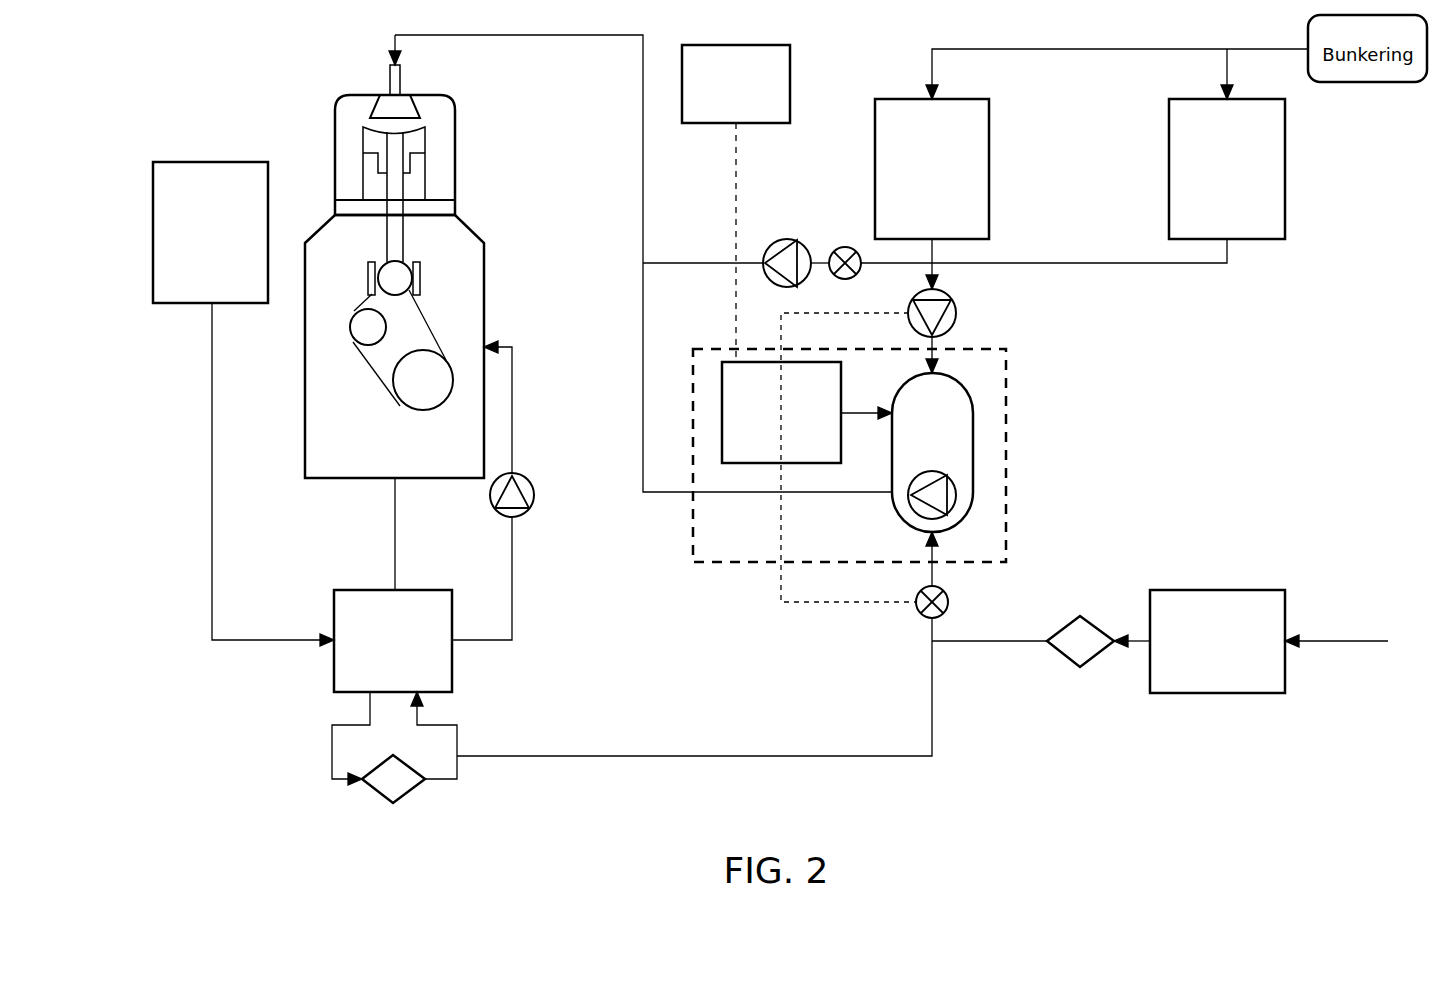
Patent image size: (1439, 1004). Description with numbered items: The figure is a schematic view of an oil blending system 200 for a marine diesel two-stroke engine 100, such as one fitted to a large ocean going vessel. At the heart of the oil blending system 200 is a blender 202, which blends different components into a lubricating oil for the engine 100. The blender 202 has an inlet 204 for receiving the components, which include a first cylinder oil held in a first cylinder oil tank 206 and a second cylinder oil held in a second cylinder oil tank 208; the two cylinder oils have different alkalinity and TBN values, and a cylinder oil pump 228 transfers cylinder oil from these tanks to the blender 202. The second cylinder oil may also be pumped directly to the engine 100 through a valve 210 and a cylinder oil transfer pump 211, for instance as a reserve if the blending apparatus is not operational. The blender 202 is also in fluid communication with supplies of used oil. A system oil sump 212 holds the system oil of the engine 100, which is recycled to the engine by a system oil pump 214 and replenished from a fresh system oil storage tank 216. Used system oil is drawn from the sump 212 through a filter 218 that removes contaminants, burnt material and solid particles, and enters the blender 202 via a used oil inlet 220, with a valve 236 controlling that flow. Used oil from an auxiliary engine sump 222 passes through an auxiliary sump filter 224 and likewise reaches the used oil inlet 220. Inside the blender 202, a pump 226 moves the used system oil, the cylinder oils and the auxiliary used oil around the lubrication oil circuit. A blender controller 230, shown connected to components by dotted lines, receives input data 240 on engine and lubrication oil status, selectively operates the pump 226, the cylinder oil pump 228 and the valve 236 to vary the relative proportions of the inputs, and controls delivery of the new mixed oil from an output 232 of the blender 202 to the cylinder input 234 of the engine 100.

The marine diesel two-stroke engine 100 is at (485, 282).
The oil blending system 200 is at (1006, 450).
The blender 202 is at (973, 505).
The inlet 204 is at (940, 370).
The first cylinder oil tank 206 is at (875, 172).
The second cylinder oil tank 208 is at (1169, 172).
The valve 210 is at (840, 248).
The cylinder oil transfer pump 211 is at (780, 240).
The system oil sump 212 is at (452, 657).
The system oil pump 214 is at (533, 500).
The fresh system oil storage tank 216 is at (153, 225).
The filter 218 is at (372, 790).
The used oil inlet 220 is at (930, 552).
The auxiliary engine sump 222 is at (1205, 695).
The auxiliary sump filter 224 is at (1070, 662).
The pump 226 is at (910, 512).
The cylinder oil pump 228 is at (958, 318).
The blender controller 230 is at (722, 400).
The output 232 is at (890, 492).
The cylinder input 234 is at (388, 88).
The valve 236 is at (950, 597).
The input data 240 is at (682, 77).